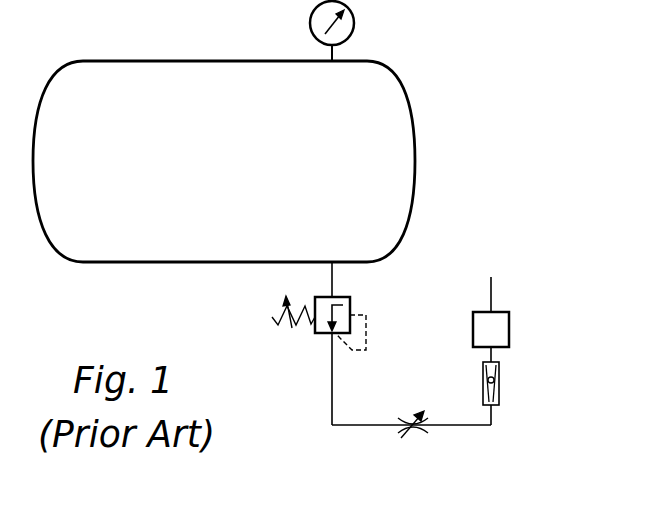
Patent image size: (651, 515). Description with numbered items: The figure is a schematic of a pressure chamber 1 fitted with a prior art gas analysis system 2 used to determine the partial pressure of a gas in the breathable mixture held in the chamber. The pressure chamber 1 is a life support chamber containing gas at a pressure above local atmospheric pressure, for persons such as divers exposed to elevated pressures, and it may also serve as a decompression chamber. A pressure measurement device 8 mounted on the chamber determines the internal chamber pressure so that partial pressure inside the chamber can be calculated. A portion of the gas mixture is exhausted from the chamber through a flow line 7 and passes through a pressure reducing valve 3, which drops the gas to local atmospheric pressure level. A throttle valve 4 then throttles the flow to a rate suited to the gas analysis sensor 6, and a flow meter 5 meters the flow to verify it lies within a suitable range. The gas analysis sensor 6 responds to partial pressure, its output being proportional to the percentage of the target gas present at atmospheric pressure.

The pressure chamber 1 is at (57, 251).
The gas analysis system 2 is at (533, 288).
The pressure reducing valve 3 is at (315, 333).
The throttle valve 4 is at (414, 432).
The flow meter 5 is at (499, 398).
The gas analysis sensor 6 is at (509, 335).
The flow line 7 is at (343, 283).
The pressure measurement device 8 is at (355, 23).